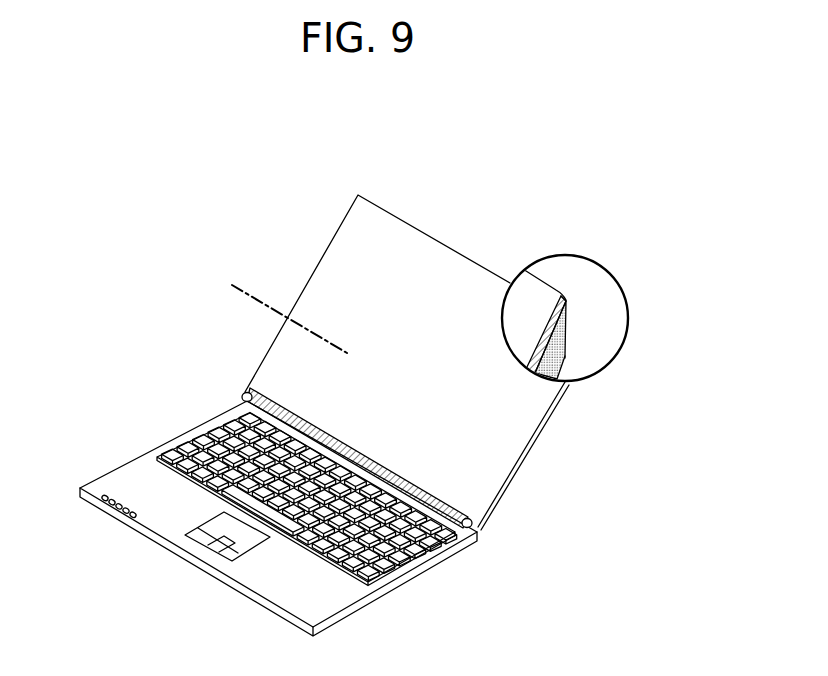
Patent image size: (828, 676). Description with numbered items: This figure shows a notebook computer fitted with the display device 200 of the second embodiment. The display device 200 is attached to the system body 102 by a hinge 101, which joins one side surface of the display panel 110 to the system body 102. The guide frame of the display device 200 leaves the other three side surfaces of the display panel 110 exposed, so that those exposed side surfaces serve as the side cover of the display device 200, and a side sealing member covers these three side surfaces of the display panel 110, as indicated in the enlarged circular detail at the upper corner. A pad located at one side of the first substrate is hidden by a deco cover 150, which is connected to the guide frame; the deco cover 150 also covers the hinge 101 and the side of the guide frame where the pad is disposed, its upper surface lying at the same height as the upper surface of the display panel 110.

The system body 102 is at (137, 437).
The hinge 101 is at (244, 391).
The deco cover 150 is at (470, 518).
The display device 200 is at (448, 357).
The display panel 110 is at (430, 253).